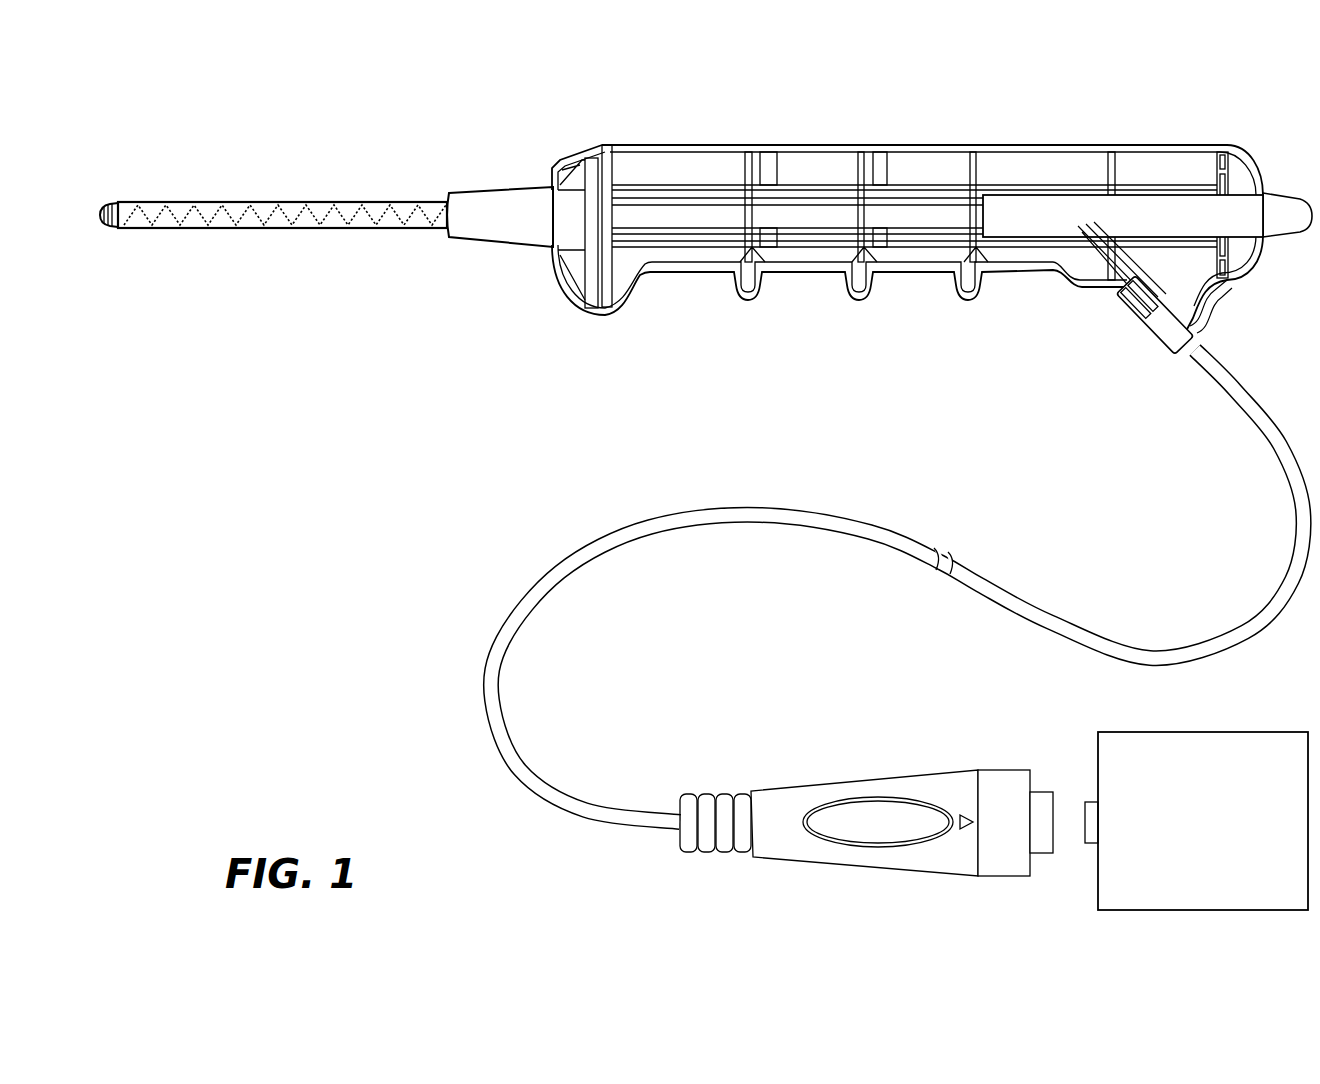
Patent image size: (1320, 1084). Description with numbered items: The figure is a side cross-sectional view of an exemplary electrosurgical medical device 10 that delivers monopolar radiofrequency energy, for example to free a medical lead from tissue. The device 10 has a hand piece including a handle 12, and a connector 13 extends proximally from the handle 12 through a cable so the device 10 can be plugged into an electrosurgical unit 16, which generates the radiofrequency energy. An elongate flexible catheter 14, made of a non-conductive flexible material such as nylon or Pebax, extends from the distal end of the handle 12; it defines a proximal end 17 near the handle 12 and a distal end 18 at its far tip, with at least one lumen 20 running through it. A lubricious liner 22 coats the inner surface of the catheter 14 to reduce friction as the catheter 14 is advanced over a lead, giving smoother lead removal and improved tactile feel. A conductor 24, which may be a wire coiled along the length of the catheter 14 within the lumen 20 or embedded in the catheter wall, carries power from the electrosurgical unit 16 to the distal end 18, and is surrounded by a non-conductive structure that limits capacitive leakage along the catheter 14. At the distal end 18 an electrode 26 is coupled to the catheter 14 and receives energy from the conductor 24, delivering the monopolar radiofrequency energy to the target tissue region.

The electrosurgical medical device 10 is at (345, 440).
The handle 12 is at (1170, 143).
The connector 13 is at (650, 823).
The elongate flexible catheter 14 is at (418, 200).
The electrosurgical unit 16 is at (1187, 874).
The proximal end 17 is at (970, 228).
The distal end 18 is at (118, 201).
The lumen 20 is at (292, 215).
The lubricious liner 22 is at (222, 226).
The conductor 24 is at (193, 211).
The electrode 26 is at (98, 218).